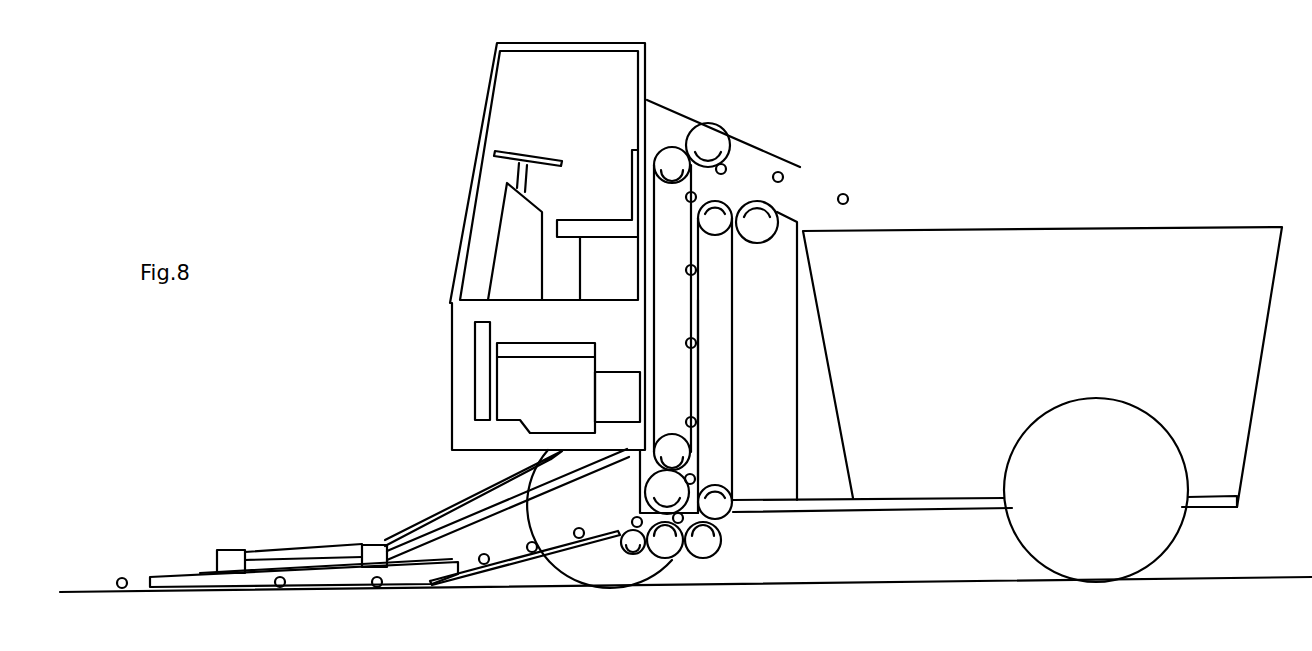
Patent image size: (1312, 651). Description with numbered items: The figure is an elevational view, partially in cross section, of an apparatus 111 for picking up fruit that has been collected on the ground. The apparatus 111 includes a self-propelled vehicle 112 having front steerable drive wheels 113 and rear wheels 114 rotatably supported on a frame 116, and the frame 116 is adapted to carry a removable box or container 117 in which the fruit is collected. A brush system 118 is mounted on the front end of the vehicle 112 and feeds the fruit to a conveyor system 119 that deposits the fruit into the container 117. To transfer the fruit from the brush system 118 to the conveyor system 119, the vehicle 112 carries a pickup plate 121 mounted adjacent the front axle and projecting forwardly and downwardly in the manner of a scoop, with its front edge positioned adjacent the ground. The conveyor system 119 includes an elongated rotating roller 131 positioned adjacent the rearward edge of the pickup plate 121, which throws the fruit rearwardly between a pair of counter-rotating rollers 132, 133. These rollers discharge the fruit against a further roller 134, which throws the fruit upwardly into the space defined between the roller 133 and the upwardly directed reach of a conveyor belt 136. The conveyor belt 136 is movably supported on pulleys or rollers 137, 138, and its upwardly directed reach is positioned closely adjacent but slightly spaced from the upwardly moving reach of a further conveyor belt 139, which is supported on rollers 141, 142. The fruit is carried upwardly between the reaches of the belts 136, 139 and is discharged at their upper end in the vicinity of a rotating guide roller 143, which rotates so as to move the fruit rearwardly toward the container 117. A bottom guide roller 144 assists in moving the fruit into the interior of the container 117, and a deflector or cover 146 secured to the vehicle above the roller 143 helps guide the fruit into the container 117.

The apparatus 111 is at (992, 121).
The self-propelled vehicle 112 is at (462, 203).
The front steerable drive wheels 113 is at (542, 508).
The rear wheels 114 is at (1031, 525).
The frame 116 is at (880, 509).
The container 117 is at (1078, 240).
The brush system 118 is at (284, 537).
The conveyor system 119 is at (742, 454).
The pickup plate 121 is at (527, 563).
The rotating roller 131 is at (630, 550).
The counter-rotating roller 132 is at (672, 548).
The counter-rotating roller 133 is at (653, 489).
The roller 134 is at (715, 546).
The conveyor belt 136 is at (733, 363).
The roller 137 is at (724, 512).
The roller 138 is at (714, 203).
The conveyor belt 139 is at (652, 311).
The roller 141 is at (671, 436).
The roller 142 is at (666, 146).
The rotating guide roller 143 is at (711, 124).
The bottom guide roller 144 is at (750, 238).
The deflector 146 is at (768, 146).